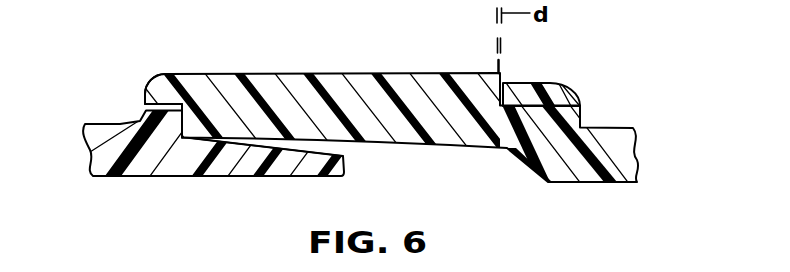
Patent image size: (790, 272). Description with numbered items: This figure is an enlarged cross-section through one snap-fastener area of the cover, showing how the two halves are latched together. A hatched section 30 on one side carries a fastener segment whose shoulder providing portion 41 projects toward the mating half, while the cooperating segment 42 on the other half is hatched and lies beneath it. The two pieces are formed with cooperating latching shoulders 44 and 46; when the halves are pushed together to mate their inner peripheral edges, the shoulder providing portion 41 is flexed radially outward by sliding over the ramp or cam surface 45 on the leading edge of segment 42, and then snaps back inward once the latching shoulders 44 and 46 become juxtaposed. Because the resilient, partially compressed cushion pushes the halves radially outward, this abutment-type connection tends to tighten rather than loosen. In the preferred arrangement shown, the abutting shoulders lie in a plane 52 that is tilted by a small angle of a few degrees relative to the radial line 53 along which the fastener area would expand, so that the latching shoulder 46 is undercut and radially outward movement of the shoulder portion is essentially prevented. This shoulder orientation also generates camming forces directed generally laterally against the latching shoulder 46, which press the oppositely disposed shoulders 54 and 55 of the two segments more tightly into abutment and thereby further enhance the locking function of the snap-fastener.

The section 30 is at (114, 163).
The shoulder providing portion 41 is at (582, 98).
The segment 42 is at (571, 172).
The latching shoulder 44 is at (470, 76).
The ramp or cam surface 45 is at (168, 76).
The latching shoulder 46 is at (505, 100).
The plane 52 is at (503, 43).
The radial line 53 is at (496, 23).
The shoulder 54 is at (183, 118).
The shoulder 55 is at (181, 137).